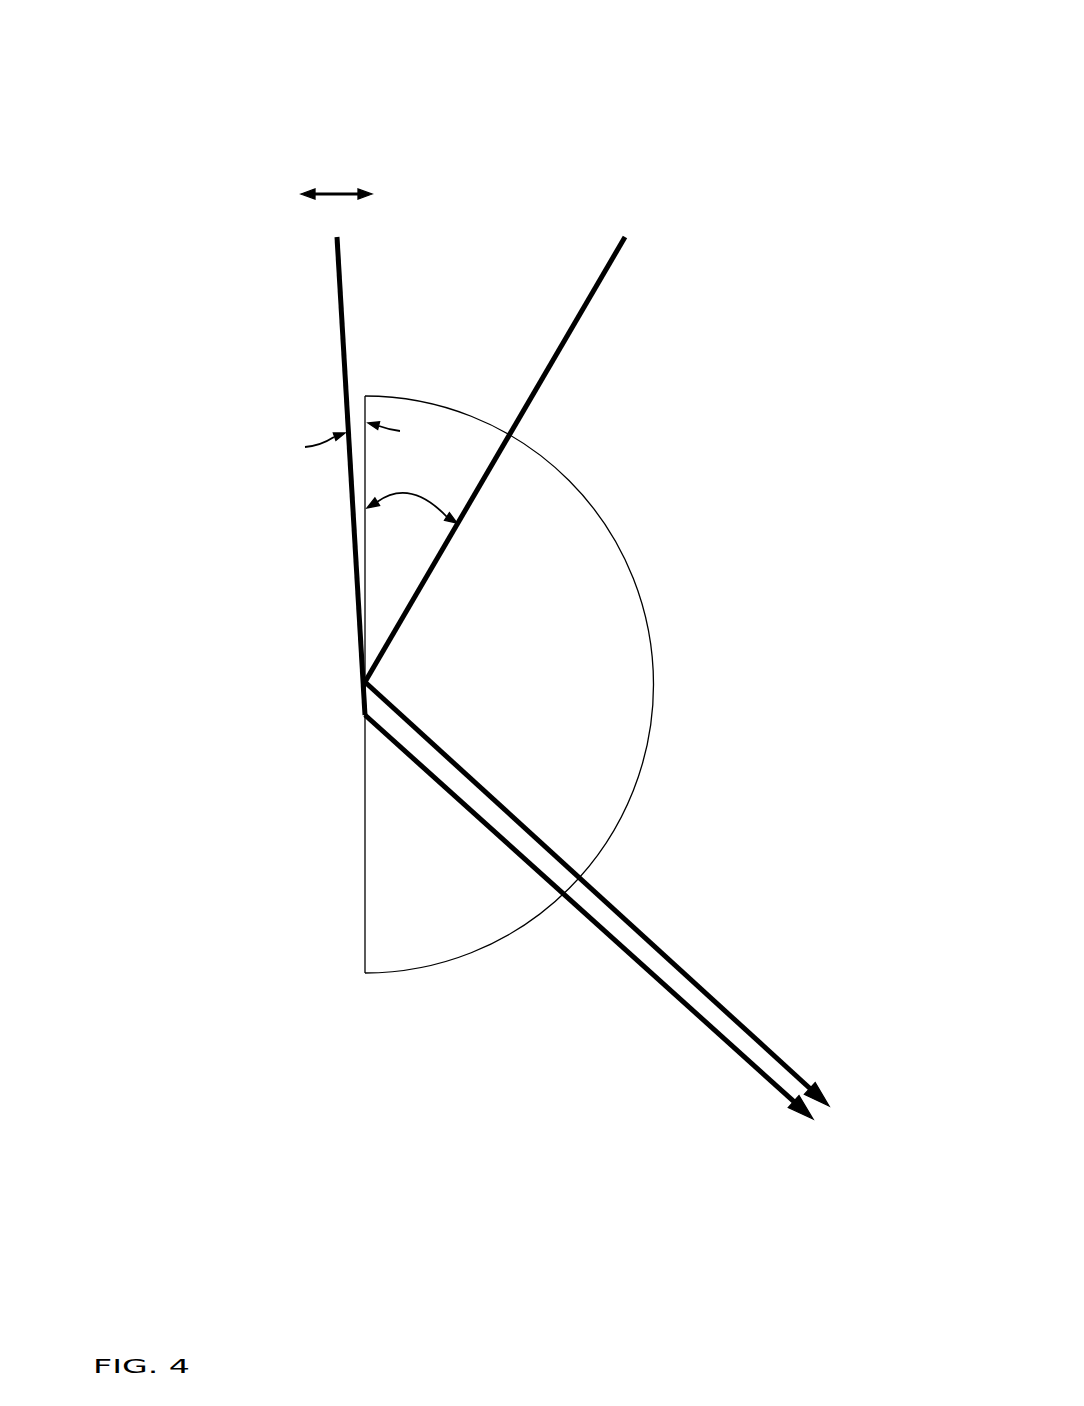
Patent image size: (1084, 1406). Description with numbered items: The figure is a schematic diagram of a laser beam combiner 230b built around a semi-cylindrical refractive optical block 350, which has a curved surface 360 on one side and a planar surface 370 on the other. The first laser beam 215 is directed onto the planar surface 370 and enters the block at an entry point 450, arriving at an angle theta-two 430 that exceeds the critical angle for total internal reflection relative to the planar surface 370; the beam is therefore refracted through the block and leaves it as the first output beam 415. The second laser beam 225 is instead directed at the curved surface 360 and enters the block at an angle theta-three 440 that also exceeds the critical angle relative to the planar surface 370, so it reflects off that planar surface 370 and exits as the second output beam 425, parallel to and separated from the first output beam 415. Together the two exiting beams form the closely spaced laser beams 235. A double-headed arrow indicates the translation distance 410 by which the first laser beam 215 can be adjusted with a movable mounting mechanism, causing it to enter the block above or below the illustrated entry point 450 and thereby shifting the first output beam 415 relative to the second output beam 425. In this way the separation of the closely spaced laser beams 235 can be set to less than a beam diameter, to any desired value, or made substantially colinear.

The laser beam combiner 230b is at (514, 620).
The translation distance 410 is at (333, 149).
The first laser beam 215 is at (315, 297).
The second laser beam 225 is at (614, 334).
The angle θ2 430 is at (341, 411).
The angle θ3 440 is at (412, 529).
The refractive optical block 350 is at (688, 588).
The curved surface 360 is at (653, 685).
The entry point 450 is at (365, 715).
The planar surface 370 is at (365, 868).
The laser beam 2 out 425 is at (683, 934).
The laser beam 1 out 415 is at (630, 988).
The closely spaced laser beams 235 is at (747, 1120).